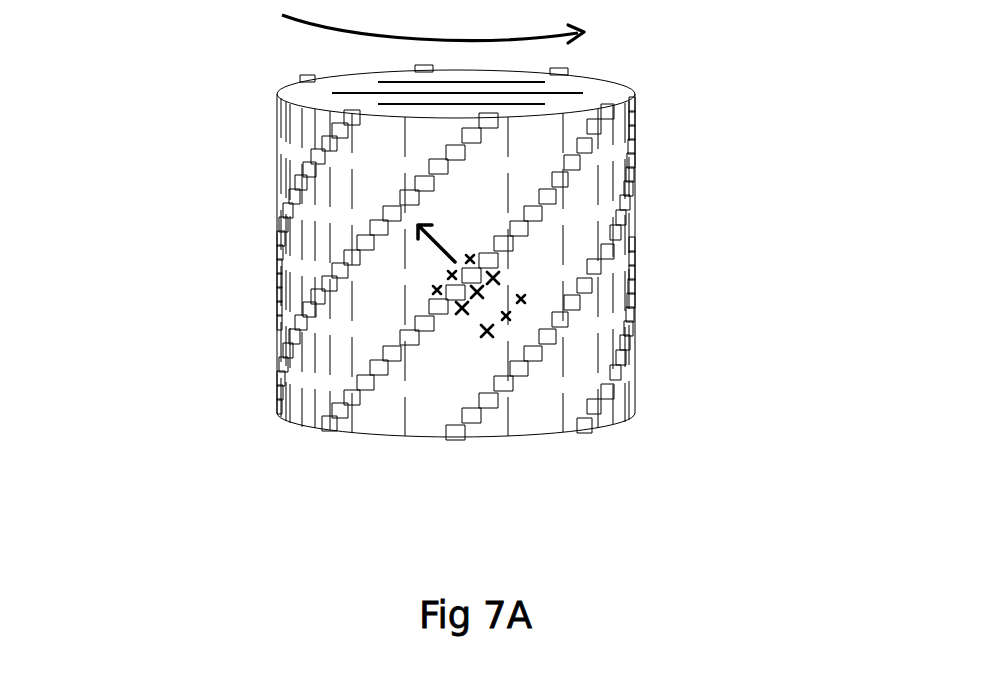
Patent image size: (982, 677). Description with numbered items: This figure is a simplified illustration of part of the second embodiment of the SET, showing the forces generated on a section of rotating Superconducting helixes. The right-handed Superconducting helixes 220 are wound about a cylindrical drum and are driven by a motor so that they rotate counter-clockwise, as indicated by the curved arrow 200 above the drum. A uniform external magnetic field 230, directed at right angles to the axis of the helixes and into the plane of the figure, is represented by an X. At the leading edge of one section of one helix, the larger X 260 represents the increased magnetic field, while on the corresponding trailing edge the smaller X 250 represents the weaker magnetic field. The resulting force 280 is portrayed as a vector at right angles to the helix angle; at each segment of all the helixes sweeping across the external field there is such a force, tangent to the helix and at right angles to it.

The counter-clockwise rotation 200 is at (330, 33).
The right-handed Superconducting helixes 220 is at (567, 177).
The resulting force 280 is at (445, 251).
The smaller X 250 is at (452, 275).
The larger X 260 is at (477, 292).
The external magnetic field 230 is at (506, 316).